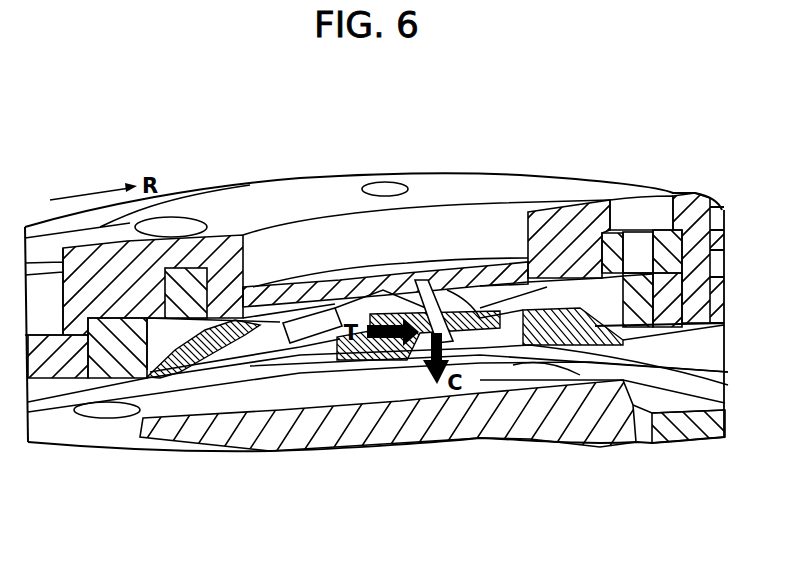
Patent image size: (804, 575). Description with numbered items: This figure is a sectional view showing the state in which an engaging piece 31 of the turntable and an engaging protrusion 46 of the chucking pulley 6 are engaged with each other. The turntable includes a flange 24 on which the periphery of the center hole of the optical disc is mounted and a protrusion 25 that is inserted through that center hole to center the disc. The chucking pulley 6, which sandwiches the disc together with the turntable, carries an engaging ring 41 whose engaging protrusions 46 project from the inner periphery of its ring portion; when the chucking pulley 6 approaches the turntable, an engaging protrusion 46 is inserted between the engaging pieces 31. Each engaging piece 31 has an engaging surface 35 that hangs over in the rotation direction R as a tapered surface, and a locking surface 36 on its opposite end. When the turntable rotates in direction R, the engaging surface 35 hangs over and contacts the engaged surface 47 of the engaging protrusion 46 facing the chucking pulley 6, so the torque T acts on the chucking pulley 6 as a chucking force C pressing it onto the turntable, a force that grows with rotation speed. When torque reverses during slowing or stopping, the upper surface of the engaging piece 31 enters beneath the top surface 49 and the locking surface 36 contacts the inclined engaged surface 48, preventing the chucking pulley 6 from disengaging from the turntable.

The chucking pulley 6 is at (213, 203).
The flange 24 is at (62, 427).
The protrusion 25 is at (240, 399).
The engaging piece 31 is at (338, 310).
The engaging surface 35 is at (478, 302).
The locking surface 36 is at (313, 342).
The engaging ring 41 is at (110, 358).
The engaging protrusion 46 is at (517, 303).
The engaged surface 47 is at (427, 310).
The engaged surface 48 is at (450, 292).
The top surface 49 is at (505, 302).